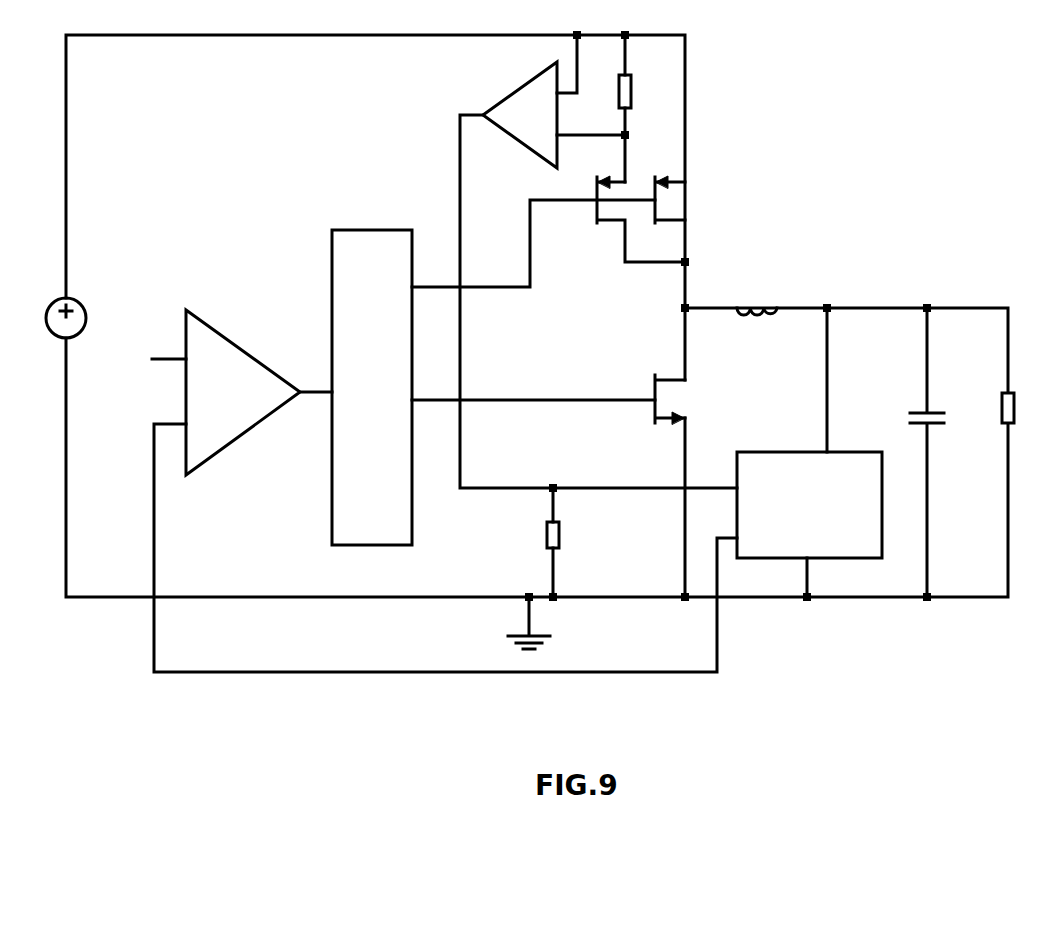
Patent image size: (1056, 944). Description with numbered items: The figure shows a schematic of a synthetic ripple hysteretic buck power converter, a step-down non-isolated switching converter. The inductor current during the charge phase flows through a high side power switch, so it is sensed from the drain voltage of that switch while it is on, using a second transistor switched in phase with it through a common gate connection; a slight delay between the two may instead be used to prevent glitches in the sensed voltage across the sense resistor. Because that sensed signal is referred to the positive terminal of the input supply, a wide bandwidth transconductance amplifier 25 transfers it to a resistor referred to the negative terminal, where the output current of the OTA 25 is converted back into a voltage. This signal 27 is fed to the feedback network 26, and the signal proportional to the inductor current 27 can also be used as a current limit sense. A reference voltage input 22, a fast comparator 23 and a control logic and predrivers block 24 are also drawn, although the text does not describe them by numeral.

The reference voltage input 22 is at (158, 358).
The fast comparator 23 is at (217, 330).
The control logic and predrivers 24 is at (360, 230).
The transconductance amplifier 25 is at (505, 96).
The feedback network 26 is at (847, 558).
The signal proportional to the inductor current 27 is at (513, 492).